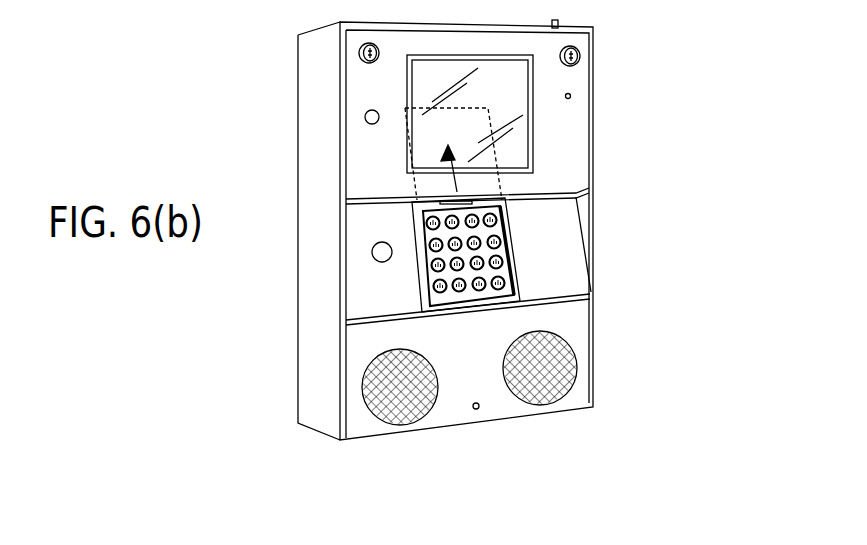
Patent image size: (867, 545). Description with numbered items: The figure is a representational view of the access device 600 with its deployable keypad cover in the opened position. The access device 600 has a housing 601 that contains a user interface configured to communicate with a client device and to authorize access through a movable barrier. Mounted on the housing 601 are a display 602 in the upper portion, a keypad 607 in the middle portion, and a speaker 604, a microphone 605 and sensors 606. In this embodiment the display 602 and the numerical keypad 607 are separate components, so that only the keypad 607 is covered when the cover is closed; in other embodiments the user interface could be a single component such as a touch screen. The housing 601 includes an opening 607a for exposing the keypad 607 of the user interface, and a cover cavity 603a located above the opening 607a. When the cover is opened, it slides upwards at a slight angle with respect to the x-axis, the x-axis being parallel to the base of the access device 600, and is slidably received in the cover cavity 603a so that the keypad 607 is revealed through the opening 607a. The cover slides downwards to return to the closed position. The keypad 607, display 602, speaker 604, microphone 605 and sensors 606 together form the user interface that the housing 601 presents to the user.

The access device 600 is at (452, 249).
The housing 601 is at (307, 55).
The display 602 is at (523, 120).
The cover cavity 603a is at (498, 181).
The speaker 604 is at (400, 425).
The microphone 605 is at (478, 410).
The sensors 606 is at (571, 96).
The keypad 607 is at (536, 255).
The opening 607a is at (520, 252).